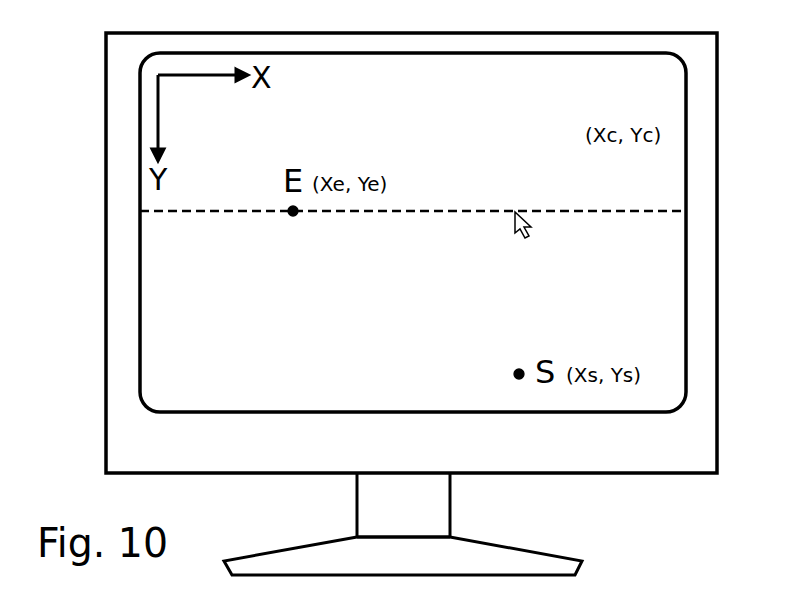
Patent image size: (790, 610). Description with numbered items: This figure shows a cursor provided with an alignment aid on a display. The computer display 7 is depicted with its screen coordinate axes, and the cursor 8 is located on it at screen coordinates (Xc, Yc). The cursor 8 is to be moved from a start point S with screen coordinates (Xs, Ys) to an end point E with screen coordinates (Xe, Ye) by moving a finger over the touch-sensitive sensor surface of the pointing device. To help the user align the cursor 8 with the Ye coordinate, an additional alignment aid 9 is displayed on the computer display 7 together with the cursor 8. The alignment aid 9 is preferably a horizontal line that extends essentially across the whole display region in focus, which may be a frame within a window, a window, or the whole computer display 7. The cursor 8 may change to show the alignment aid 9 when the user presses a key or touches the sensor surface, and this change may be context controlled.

The computer display 7 is at (270, 283).
The cursor 8 is at (515, 210).
The alignment aid 9 is at (431, 210).